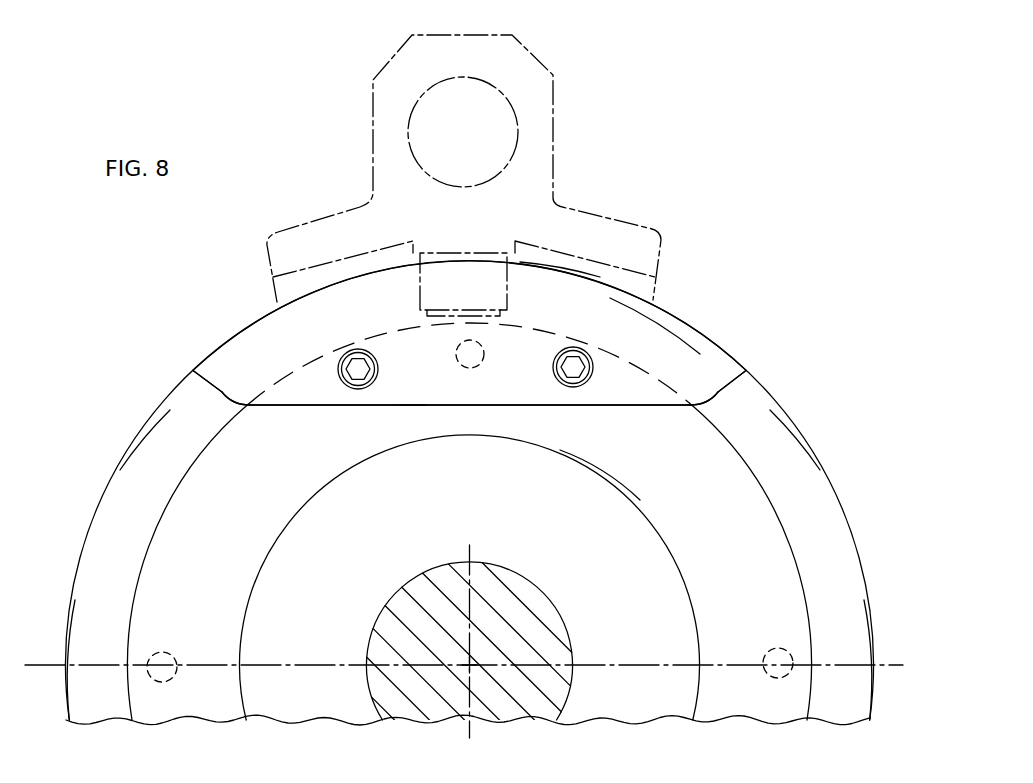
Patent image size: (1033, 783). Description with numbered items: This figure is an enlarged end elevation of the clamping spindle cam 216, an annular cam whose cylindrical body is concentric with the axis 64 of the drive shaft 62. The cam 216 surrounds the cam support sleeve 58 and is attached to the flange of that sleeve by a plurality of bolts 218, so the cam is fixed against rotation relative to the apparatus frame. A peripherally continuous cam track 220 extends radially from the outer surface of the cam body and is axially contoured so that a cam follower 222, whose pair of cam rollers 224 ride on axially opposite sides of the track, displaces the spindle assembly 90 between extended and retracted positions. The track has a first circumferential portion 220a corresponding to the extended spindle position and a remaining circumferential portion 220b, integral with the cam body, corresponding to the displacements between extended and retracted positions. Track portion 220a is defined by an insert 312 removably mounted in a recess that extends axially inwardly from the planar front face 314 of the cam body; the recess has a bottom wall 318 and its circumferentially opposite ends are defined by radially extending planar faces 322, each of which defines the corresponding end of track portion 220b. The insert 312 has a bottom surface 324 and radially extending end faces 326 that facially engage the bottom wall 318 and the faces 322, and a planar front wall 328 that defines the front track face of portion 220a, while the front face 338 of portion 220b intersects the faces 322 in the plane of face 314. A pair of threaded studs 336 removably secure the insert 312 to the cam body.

The cam support sleeve 58 is at (620, 515).
The drive shaft 62 is at (528, 718).
The axis 64 is at (474, 663).
The spindle assembly 90 is at (500, 93).
The cam 216 is at (798, 343).
The bolts 218 is at (475, 368).
The cam track 220 is at (113, 470).
The first circumferential portion 220a is at (683, 336).
The remaining circumferential portion 220b is at (80, 557).
The cam follower 222 is at (562, 132).
The cam rollers 224 is at (467, 282).
The insert 312 is at (267, 317).
The front face 314 is at (180, 527).
The bottom wall 318 is at (412, 403).
The planar faces 322 is at (215, 377).
The bottom surface 324 is at (368, 406).
The end faces 326 is at (200, 380).
The front wall 328 is at (548, 278).
The threaded studs 336 is at (355, 351).
The front face 338 is at (163, 417).